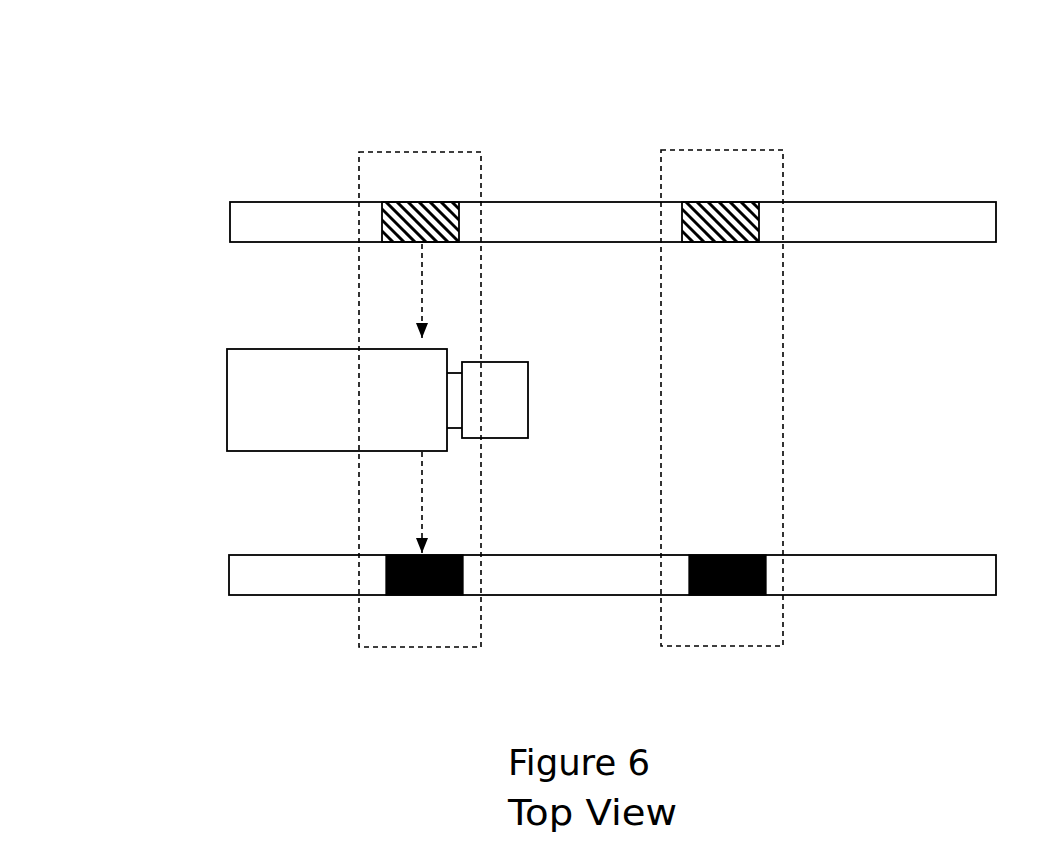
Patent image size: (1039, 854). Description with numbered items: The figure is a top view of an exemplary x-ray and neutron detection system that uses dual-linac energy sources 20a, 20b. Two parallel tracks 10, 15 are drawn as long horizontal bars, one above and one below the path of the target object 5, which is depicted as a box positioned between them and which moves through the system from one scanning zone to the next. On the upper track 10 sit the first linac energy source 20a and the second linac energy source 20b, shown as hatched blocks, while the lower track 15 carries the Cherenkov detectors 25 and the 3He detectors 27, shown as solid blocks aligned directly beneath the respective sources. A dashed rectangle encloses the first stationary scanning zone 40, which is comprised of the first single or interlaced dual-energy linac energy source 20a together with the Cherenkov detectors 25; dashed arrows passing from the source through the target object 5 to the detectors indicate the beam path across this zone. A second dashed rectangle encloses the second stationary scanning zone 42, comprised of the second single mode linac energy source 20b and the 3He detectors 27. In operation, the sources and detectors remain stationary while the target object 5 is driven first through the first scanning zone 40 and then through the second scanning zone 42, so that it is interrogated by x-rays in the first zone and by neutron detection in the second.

The target object 5 is at (225, 398).
The track 10 is at (247, 199).
The track 15 is at (233, 604).
The first linac energy source 20a is at (408, 200).
The second linac energy source 20b is at (716, 200).
The Cherenkov detectors 25 is at (420, 597).
The 3He detectors 27 is at (732, 599).
The first stationary scanning zone 40 is at (459, 151).
The second stationary scanning zone 42 is at (788, 166).